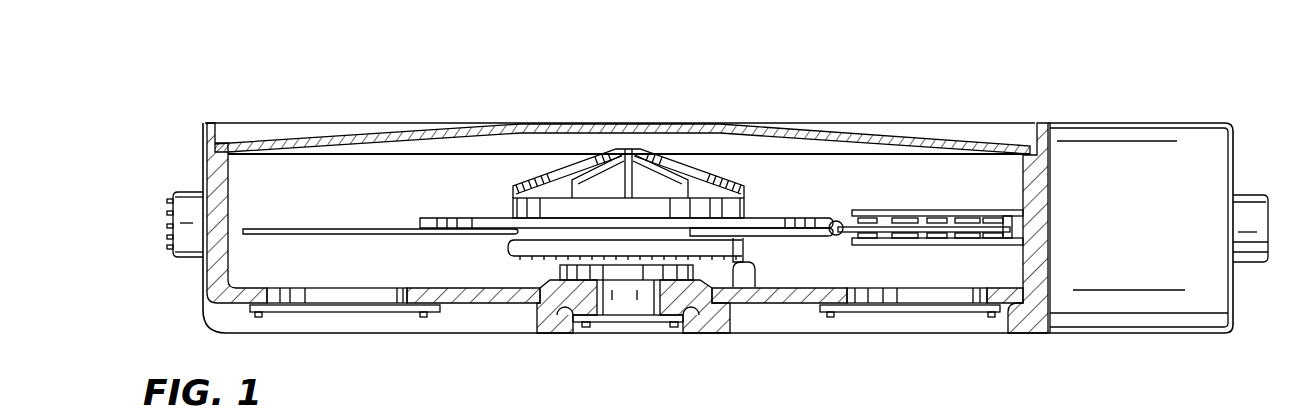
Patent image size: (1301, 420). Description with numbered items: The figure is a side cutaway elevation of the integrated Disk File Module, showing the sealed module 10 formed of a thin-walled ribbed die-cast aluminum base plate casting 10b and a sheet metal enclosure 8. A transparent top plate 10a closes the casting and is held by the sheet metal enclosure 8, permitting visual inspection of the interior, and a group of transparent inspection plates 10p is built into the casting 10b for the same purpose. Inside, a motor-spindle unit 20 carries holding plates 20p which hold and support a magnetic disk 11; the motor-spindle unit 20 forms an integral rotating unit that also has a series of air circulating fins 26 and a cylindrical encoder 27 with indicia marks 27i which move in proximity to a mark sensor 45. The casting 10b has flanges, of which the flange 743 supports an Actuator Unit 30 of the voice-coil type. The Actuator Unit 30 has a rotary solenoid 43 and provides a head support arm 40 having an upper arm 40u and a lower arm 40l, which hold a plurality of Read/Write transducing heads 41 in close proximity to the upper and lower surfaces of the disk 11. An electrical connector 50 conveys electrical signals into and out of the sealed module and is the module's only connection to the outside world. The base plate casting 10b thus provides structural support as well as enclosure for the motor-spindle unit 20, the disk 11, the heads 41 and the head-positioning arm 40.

The sheet metal enclosure 8 is at (203, 322).
The sealed module 10 is at (236, 108).
The transparent top plate 10a is at (520, 123).
The base plate casting 10b is at (236, 305).
The transparent inspection plates 10p is at (347, 312).
The magnetic disk 11 is at (332, 226).
The motor-spindle unit 20 is at (607, 148).
The holding plates 20p is at (770, 216).
The air circulating fins 26 is at (512, 187).
The cylindrical encoder 27 is at (507, 257).
The indicia marks 27i is at (738, 250).
The Actuator Unit 30 is at (1144, 119).
The head support arm 40 is at (930, 228).
The upper arm 40u is at (923, 210).
The lower arm 40l is at (918, 247).
The Read/Write transducing heads 41 is at (881, 242).
The rotary solenoid 43 is at (1250, 205).
The mark sensor 45 is at (738, 284).
The electrical connector 50 is at (198, 193).
The flange 743 is at (1040, 250).